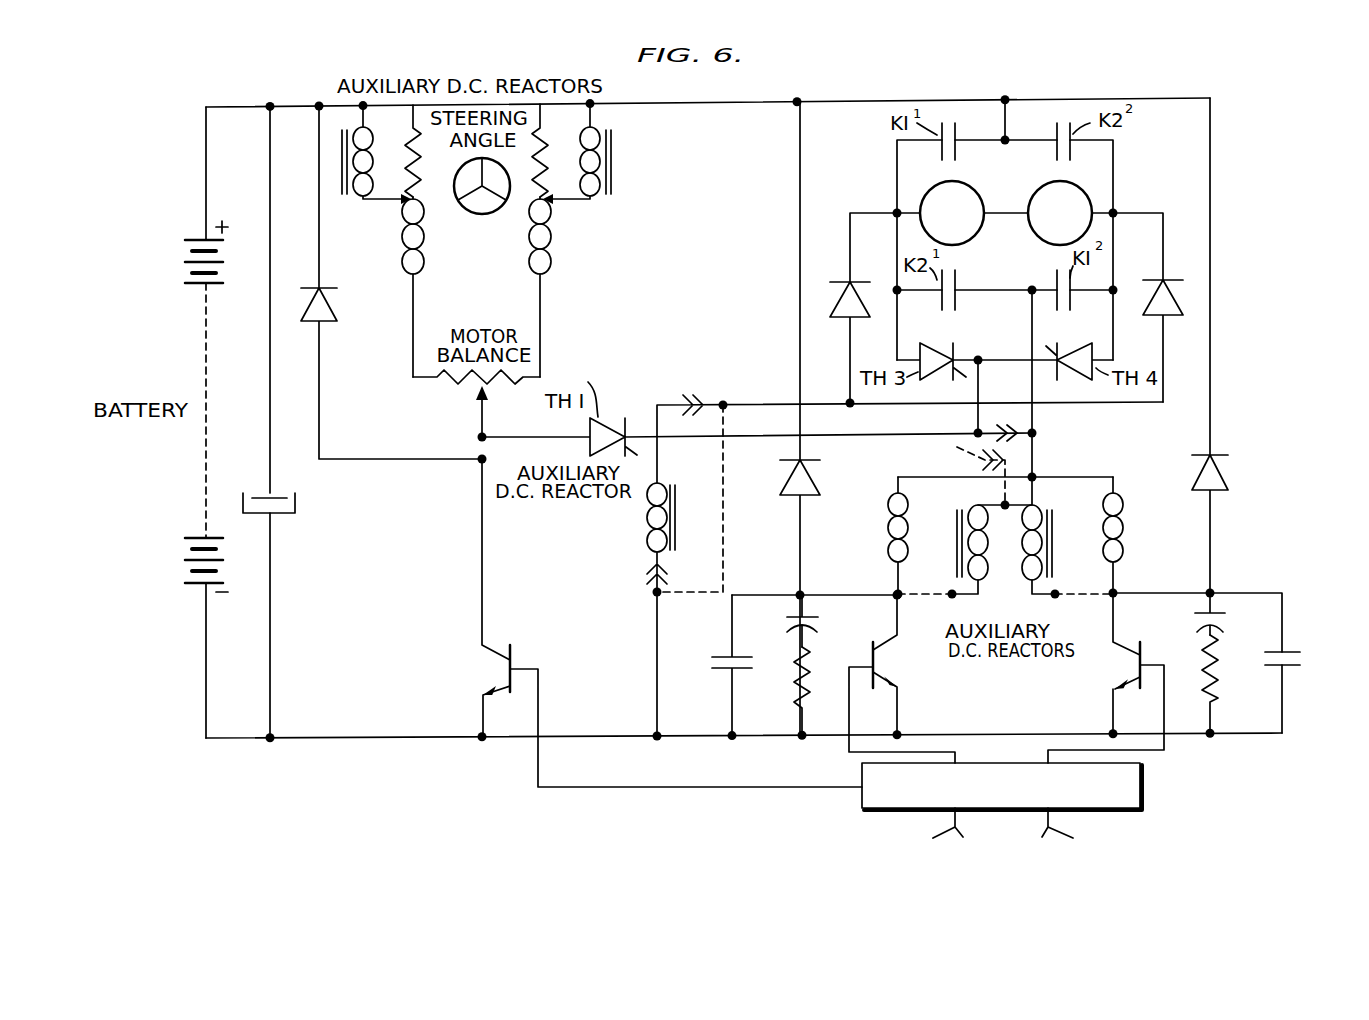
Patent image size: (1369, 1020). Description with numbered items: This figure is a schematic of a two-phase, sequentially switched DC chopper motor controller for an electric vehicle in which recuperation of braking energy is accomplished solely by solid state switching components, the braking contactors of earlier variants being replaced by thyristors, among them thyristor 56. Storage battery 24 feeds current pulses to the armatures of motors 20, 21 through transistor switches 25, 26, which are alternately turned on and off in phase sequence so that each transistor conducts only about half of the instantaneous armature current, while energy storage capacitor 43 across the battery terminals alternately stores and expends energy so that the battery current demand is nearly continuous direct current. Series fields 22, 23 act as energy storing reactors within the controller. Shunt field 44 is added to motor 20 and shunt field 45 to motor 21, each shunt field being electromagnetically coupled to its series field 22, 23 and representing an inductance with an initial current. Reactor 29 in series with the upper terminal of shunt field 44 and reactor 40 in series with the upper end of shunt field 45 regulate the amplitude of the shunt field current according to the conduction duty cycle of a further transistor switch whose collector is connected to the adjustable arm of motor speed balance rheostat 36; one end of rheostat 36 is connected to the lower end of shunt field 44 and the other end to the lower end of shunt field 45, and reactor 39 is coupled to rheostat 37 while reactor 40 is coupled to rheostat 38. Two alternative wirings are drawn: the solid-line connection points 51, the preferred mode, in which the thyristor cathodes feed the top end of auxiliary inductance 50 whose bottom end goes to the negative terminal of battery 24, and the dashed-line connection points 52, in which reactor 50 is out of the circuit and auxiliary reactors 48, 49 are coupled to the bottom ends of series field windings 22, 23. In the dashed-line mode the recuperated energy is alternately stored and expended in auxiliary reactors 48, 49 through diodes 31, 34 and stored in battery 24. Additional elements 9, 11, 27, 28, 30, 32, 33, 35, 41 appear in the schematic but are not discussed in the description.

The diode 9 is at (837, 321).
The diode 11 is at (1175, 319).
The motor 20 is at (941, 182).
The motor 21 is at (1073, 181).
The series field 22 is at (890, 497).
The series field 23 is at (1104, 533).
The battery 24 is at (207, 405).
The transistor switch 25 is at (872, 650).
The transistor switch 26 is at (1144, 655).
The controls 27 is at (1143, 780).
The capacitor 28 is at (718, 655).
The reactor 29 is at (810, 616).
The resistor 30 is at (793, 660).
The diode 31 is at (806, 460).
The resistor 32 is at (1220, 665).
The capacitor 33 is at (1290, 650).
The diode 34 is at (1222, 492).
The transistor 35 is at (513, 657).
The motor speed balance rheostat 36 is at (451, 384).
The rheostat 37 is at (421, 166).
The rheostat 38 is at (534, 165).
The reactor 39 is at (366, 143).
The reactor 40 is at (586, 142).
The diode 41 is at (337, 289).
The energy storage capacitor 43 is at (290, 514).
The shunt field 44 is at (403, 223).
The shunt field 45 is at (533, 223).
The auxiliary reactor 48 is at (983, 564).
The auxiliary reactor 49 is at (1022, 546).
The auxiliary inductance 50 is at (647, 499).
The connection point 51 is at (651, 566).
The connection point 52 is at (728, 408).
The thyristor 56 is at (727, 536).